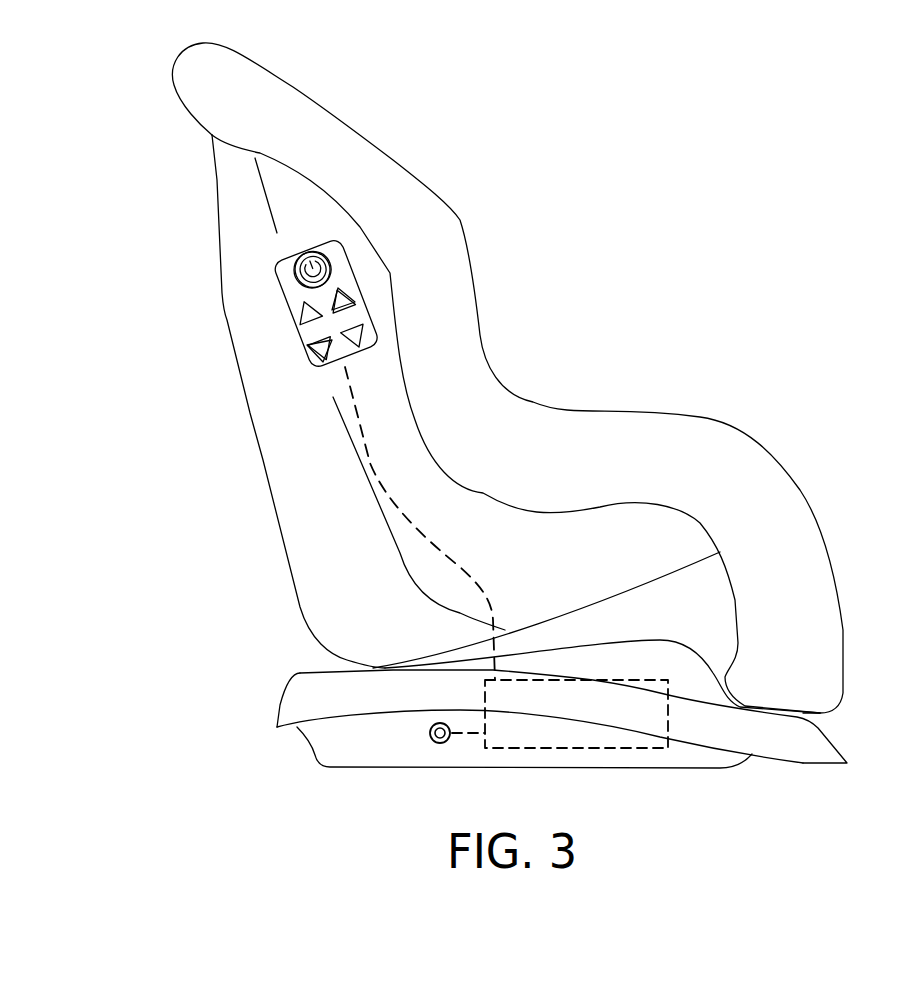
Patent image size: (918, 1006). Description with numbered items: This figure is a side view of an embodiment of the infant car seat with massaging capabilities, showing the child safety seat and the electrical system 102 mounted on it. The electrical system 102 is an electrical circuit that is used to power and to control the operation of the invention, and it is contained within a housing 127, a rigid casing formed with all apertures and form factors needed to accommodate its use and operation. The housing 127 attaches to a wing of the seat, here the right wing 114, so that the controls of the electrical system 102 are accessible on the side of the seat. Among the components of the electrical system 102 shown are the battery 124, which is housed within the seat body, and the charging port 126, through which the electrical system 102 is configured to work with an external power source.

The electrical system 102 is at (231, 278).
The right wing 114 is at (420, 430).
The battery 124 is at (590, 748).
The charging port 126 is at (427, 733).
The housing 127 is at (237, 297).